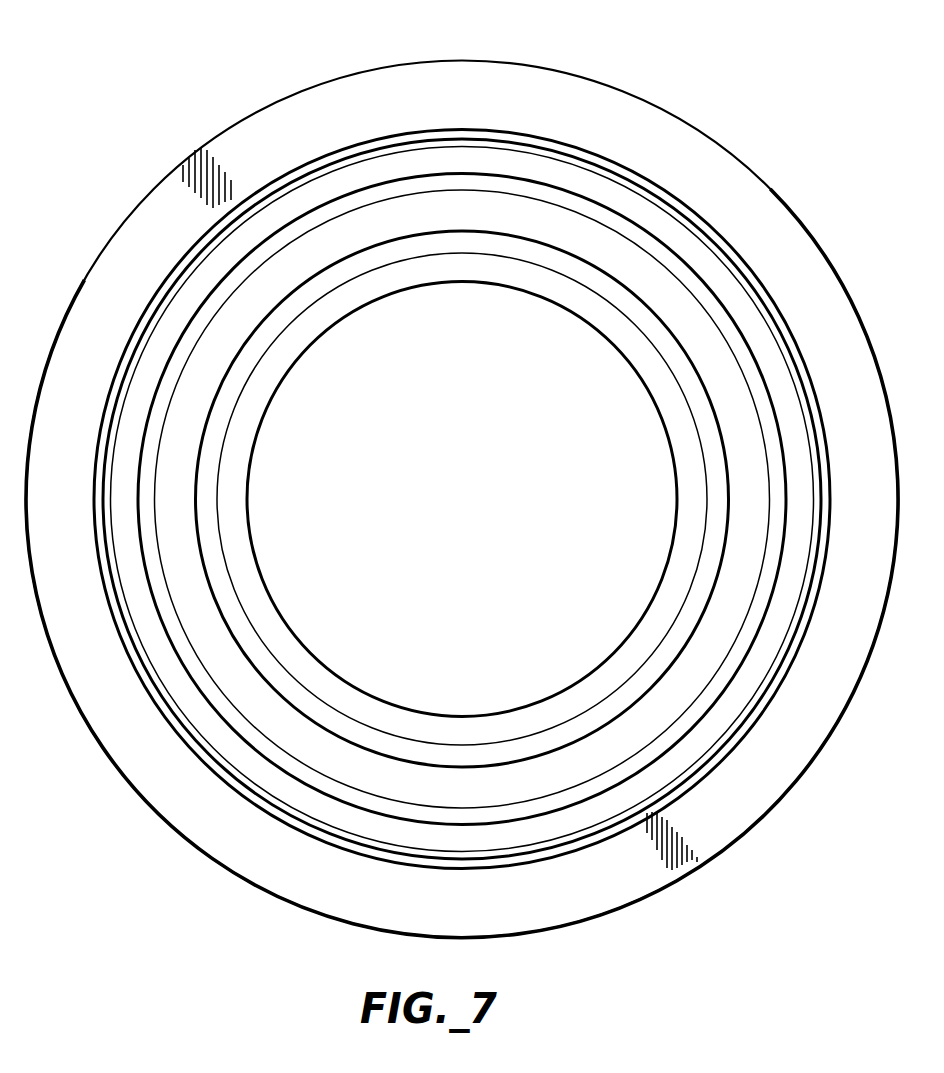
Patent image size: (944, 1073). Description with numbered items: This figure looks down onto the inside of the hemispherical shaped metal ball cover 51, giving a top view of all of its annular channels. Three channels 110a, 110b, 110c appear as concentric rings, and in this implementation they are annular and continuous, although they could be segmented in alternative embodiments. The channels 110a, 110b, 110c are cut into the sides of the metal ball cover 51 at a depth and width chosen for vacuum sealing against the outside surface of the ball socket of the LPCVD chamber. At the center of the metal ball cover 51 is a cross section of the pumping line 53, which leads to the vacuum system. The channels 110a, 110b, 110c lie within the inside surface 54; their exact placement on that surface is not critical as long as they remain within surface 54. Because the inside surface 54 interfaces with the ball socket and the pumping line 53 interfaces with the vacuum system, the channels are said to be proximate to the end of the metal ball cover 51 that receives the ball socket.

The metal ball cover 51 is at (643, 903).
The pumping line 53 is at (480, 494).
The inside surface 54 is at (727, 804).
The channel 110a is at (513, 137).
The channel 110b is at (622, 227).
The channel 110c is at (658, 337).